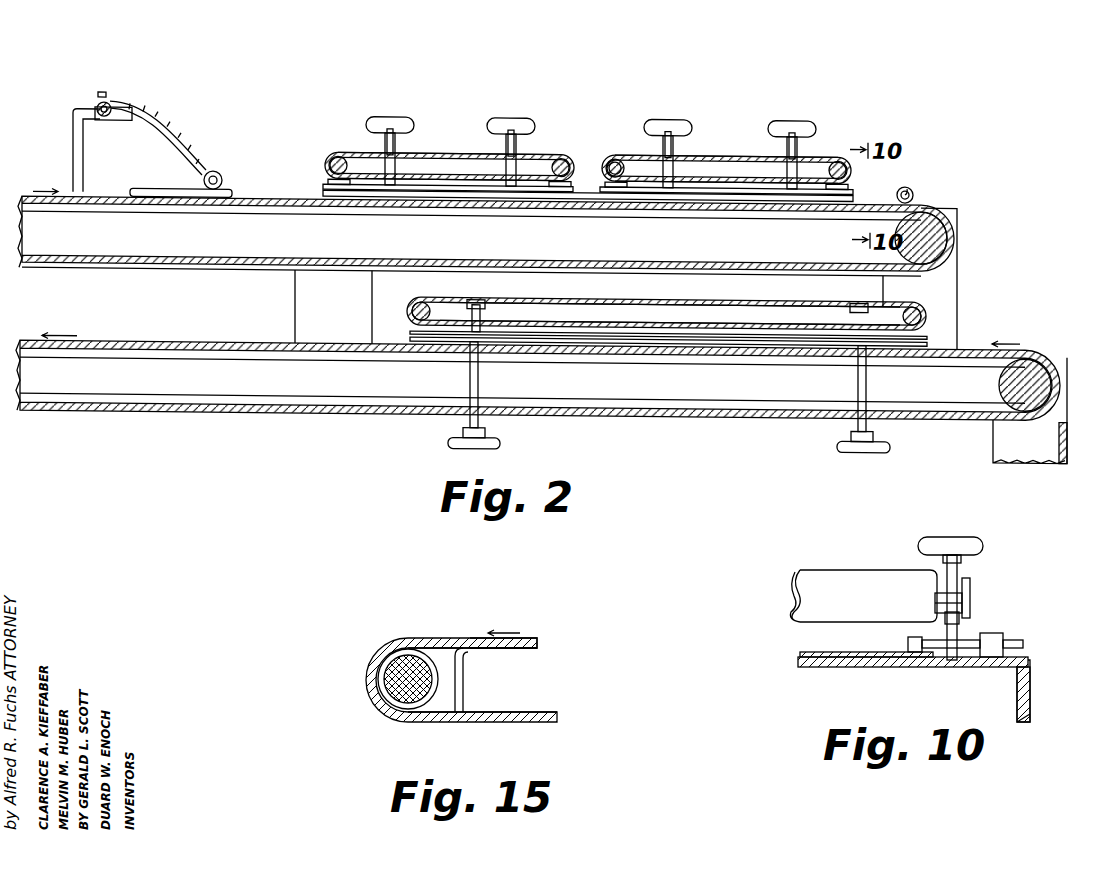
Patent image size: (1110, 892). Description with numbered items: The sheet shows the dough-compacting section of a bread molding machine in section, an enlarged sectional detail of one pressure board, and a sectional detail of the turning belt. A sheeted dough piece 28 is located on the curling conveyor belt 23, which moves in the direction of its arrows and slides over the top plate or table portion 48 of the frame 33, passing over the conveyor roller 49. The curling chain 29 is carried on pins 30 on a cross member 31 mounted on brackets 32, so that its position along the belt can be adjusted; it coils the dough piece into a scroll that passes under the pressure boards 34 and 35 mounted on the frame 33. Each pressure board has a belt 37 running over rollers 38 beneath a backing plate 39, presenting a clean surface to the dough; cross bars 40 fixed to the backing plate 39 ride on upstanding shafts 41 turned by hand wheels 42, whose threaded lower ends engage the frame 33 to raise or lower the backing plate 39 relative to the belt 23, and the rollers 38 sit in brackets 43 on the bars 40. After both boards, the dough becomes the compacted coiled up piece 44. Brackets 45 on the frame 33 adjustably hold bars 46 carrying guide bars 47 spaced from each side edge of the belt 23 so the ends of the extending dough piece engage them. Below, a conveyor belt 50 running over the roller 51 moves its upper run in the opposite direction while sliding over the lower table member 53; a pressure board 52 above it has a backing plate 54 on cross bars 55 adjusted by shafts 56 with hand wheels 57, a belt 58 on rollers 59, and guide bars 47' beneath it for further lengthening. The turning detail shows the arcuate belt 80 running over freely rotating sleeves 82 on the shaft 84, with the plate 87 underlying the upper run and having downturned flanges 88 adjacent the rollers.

In FIG. 2, the curling conveyor belt 23 is at (250, 196).
In FIG. 10, the curling conveyor belt 23 is at (812, 652).
In FIG. 2, the sheeted dough piece 28 is at (152, 187).
In FIG. 2, the curling chain 29 is at (160, 140).
In FIG. 2, the pins 30 is at (106, 97).
In FIG. 2, the cross member 31 is at (96, 104).
In FIG. 2, the brackets 32 is at (73, 150).
In FIG. 2, the frame 33 is at (958, 262).
In FIG. 10, the frame 33 is at (1030, 700).
In FIG. 2, the pressure board 34 is at (450, 152).
In FIG. 2, the pressure board 35 is at (725, 152).
In FIG. 2, the belt 37 is at (610, 154).
In FIG. 10, the belt 37 is at (858, 572).
In FIG. 2, the rollers 38 is at (330, 156).
In FIG. 10, the rollers 38 is at (792, 580).
In FIG. 2, the backing plate 39 is at (425, 152).
In FIG. 2, the cross bars 40 is at (385, 160).
In FIG. 10, the cross bars 40 is at (972, 622).
In FIG. 2, the upstanding shafts 41 is at (395, 140).
In FIG. 10, the upstanding shafts 41 is at (960, 568).
In FIG. 2, the hand wheels 42 is at (390, 116).
In FIG. 10, the hand wheels 42 is at (940, 540).
In FIG. 10, the brackets 43 is at (970, 594).
In FIG. 2, the compacted coiled up piece of dough 44 is at (912, 180).
In FIG. 2, the brackets 45 is at (340, 203).
In FIG. 10, the brackets 45 is at (995, 633).
In FIG. 10, the bars 46 is at (1023, 644).
In FIG. 2, the guide bars 47 is at (592, 178).
In FIG. 10, the guide bars 47 is at (909, 638).
In FIG. 2, the guide bars 47' is at (668, 363).
In FIG. 2, the table portion 48 is at (712, 200).
In FIG. 10, the table portion 48 is at (812, 668).
In FIG. 2, the conveyor roller 49 is at (945, 223).
In FIG. 2, the conveyor belt 50 is at (980, 340).
In FIG. 2, the roller 51 is at (1035, 360).
In FIG. 2, the pressure board 52 is at (690, 293).
In FIG. 2, the lower table member 53 is at (680, 340).
In FIG. 2, the backing plate 54 is at (594, 316).
In FIG. 2, the cross bars 55 is at (485, 300).
In FIG. 2, the shafts 56 is at (470, 376).
In FIG. 2, the hand wheels 57 is at (450, 438).
In FIG. 2, the belt 58 is at (476, 296).
In FIG. 2, the rollers 59 is at (412, 308).
In FIG. 15, the arcuate belt 80 is at (470, 640).
In FIG. 15, the sleeves 82 is at (382, 650).
In FIG. 15, the shaft 84 is at (420, 665).
In FIG. 15, the plate 87 is at (530, 650).
In FIG. 15, the downturned flanges 88 is at (465, 688).